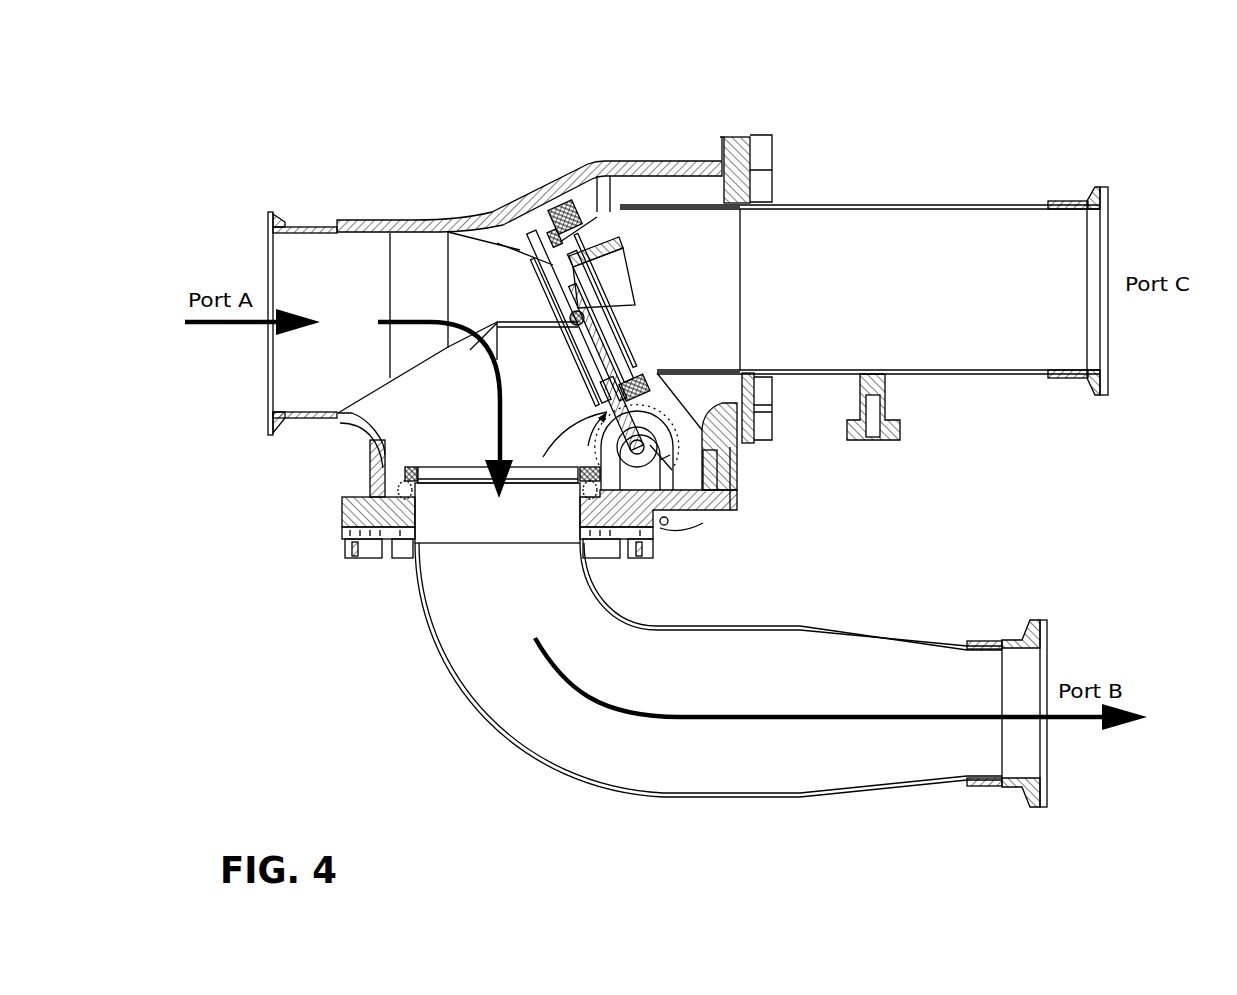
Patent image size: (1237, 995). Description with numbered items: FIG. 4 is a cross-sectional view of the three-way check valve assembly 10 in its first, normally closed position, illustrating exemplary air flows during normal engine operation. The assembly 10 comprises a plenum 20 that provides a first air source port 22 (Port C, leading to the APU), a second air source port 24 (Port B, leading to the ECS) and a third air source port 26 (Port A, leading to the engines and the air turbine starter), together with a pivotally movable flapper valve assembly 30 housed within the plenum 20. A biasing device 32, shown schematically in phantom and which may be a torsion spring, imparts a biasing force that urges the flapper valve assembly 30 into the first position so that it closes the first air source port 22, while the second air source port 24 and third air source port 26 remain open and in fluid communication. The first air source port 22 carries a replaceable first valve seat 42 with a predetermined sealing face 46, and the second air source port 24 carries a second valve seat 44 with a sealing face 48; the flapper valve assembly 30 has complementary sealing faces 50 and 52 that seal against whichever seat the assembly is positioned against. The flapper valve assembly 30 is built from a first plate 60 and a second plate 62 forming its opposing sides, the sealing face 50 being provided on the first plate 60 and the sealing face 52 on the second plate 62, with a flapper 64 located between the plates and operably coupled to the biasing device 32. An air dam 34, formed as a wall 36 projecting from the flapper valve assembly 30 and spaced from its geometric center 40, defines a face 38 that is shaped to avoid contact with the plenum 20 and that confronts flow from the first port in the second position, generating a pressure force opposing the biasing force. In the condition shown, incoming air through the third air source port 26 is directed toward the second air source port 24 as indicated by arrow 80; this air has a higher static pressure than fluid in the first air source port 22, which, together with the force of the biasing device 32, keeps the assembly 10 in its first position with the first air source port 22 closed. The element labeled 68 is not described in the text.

The 3-way check valve assembly 10 is at (430, 150).
The plenum 20 is at (612, 148).
The first air source port 22 is at (1097, 200).
The second air source port 24 is at (1044, 637).
The third air source port 26 is at (272, 210).
The flapper valve assembly 30 is at (540, 218).
The biasing device 32 is at (668, 525).
The air dam 34 is at (626, 220).
The wall 36 is at (600, 236).
The face 38 is at (603, 268).
The geometric center 40 is at (617, 300).
The first valve seat 42 is at (558, 236).
The second valve seat 44 is at (376, 473).
The sealing face 46 is at (540, 240).
The sealing face 48 is at (378, 458).
The sealing face 50 is at (569, 203).
The sealing face 52 is at (497, 252).
The first plate 60 is at (657, 368).
The second plate 62 is at (578, 425).
The flapper 64 is at (590, 360).
The actuator shaft 68 is at (615, 340).
The arrow 80 is at (226, 328).